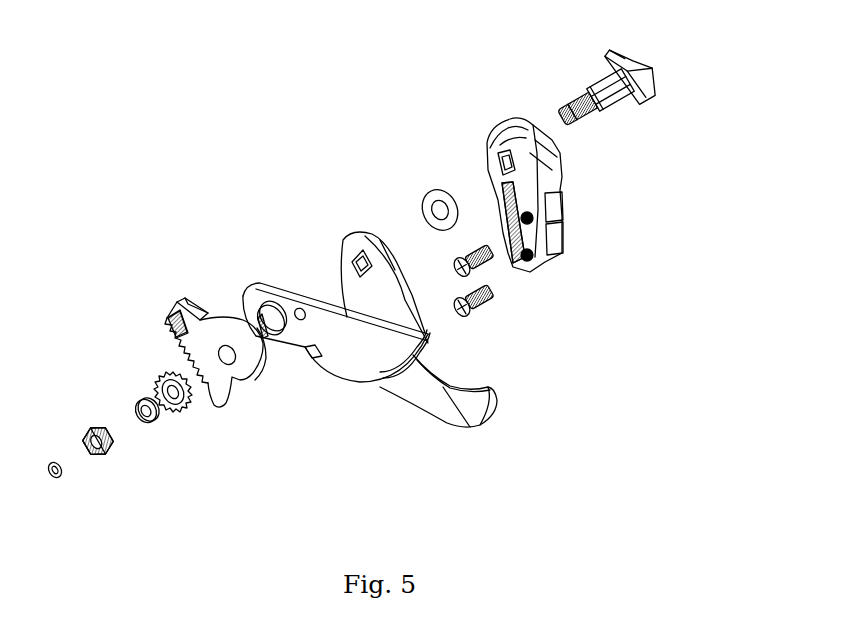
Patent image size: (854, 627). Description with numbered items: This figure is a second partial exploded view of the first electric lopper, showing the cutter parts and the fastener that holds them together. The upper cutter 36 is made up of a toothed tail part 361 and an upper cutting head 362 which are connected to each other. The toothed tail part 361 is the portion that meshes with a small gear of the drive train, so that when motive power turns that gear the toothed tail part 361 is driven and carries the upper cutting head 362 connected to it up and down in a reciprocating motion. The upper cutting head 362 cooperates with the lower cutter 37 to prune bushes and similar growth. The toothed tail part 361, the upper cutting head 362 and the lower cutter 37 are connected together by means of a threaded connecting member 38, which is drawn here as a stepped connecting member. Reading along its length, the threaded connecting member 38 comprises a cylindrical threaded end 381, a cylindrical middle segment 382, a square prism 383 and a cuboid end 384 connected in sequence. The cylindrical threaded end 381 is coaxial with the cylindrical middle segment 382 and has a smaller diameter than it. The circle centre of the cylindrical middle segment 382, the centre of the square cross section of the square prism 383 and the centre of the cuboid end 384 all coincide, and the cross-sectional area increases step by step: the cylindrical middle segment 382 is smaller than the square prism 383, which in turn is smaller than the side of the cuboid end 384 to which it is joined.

The upper cutter 36 is at (296, 388).
The toothed tail part 361 is at (258, 378).
The upper cutting head 362 is at (343, 365).
The lower cutter 37 is at (413, 400).
The threaded connecting member 38 is at (666, 112).
The cylindrical threaded end 381 is at (583, 121).
The cylindrical middle segment 382 is at (608, 114).
The square prism 383 is at (645, 102).
The cuboid end 384 is at (653, 69).